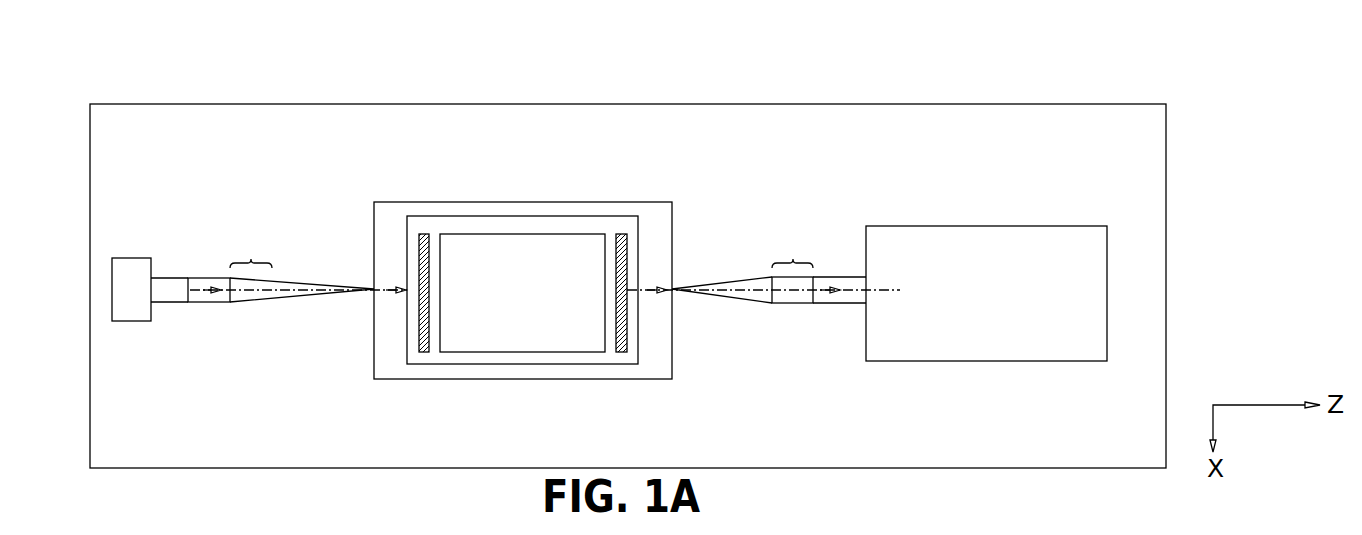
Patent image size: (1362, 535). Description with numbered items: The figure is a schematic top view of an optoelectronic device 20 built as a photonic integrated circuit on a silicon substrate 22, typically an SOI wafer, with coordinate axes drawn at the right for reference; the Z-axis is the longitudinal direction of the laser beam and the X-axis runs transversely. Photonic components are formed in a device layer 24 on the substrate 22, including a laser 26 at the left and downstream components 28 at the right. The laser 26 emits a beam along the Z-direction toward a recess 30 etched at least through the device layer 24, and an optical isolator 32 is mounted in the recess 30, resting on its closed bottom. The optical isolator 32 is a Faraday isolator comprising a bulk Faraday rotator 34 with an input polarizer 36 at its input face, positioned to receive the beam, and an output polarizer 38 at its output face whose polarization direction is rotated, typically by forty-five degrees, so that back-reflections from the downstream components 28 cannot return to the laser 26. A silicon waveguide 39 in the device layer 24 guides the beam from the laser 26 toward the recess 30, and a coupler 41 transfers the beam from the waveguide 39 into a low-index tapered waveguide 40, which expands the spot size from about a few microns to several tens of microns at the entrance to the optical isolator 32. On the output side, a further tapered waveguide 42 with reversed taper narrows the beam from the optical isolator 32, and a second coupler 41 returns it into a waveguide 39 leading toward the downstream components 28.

The optoelectronic device 20 is at (92, 70).
The silicon substrate 22 is at (718, 104).
The device layer 24 is at (181, 176).
The laser 26 is at (134, 322).
The downstream components 28 is at (1005, 226).
The recess 30 is at (500, 380).
The optical isolator 32 is at (465, 216).
The Faraday rotator 34 is at (463, 352).
The input polarizer 36 is at (427, 336).
The output polarizer 38 is at (620, 336).
The waveguide 39 is at (204, 303).
The tapered waveguide 40 is at (318, 278).
The coupler 41 is at (521, 249).
The tapered waveguide 42 is at (722, 277).